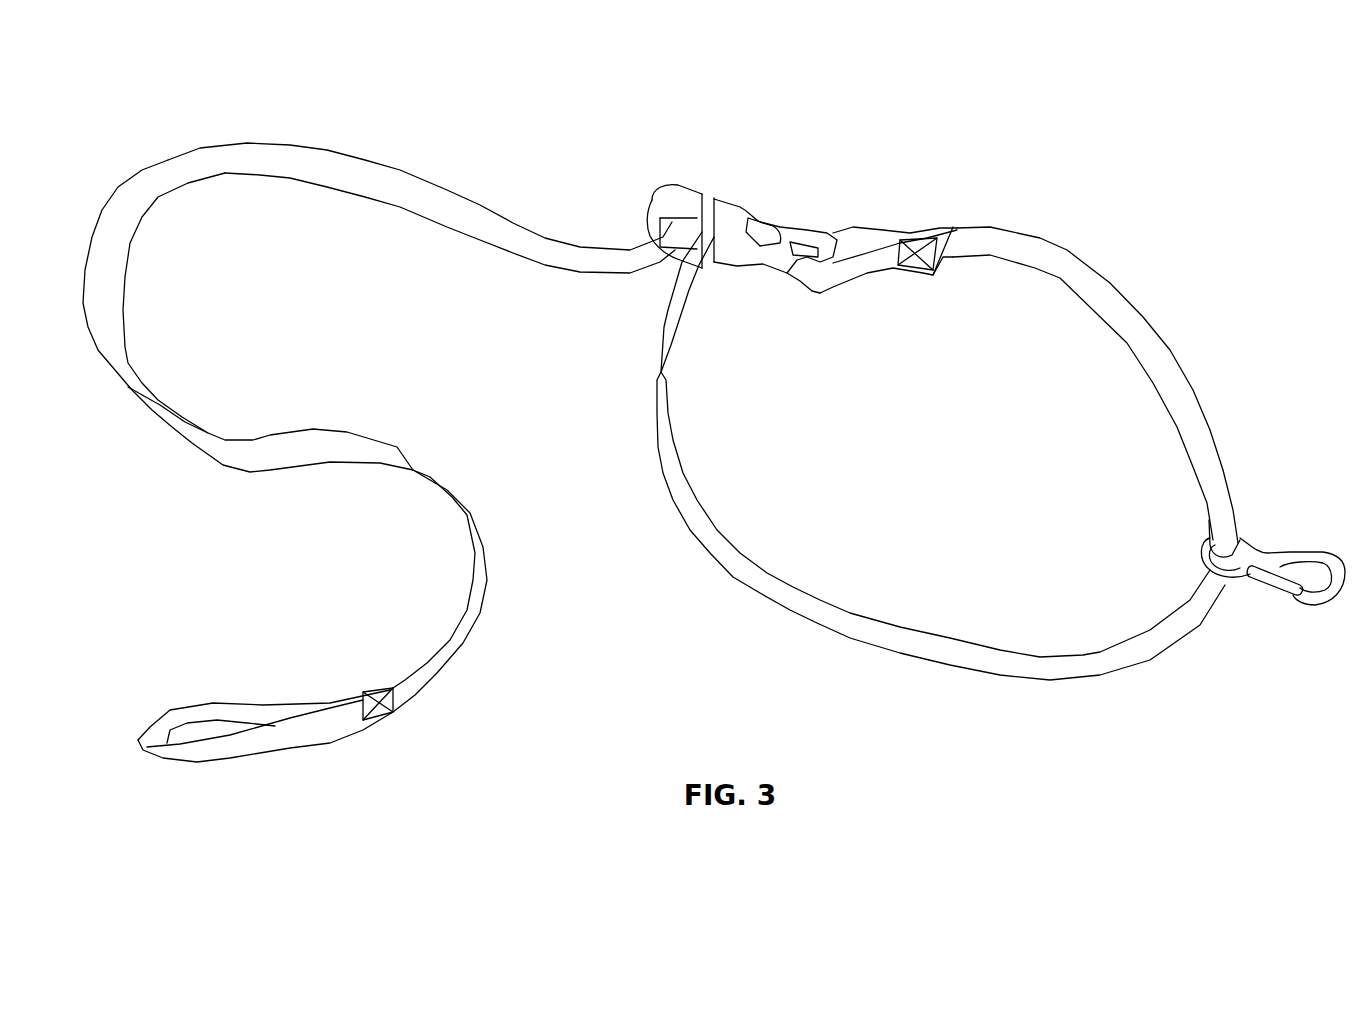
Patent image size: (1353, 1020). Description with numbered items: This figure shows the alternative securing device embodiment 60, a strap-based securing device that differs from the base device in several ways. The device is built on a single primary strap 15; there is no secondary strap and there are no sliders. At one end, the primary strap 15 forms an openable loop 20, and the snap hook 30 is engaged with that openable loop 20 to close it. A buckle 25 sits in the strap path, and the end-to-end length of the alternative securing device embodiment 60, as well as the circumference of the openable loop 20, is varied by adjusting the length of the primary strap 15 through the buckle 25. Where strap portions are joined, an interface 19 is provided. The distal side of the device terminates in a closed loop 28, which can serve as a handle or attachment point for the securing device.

The alternative securing device embodiment 60 is at (830, 110).
The primary strap 15 is at (160, 146).
The interface 19 is at (373, 723).
The openable loop 20 is at (1186, 331).
The buckle 25 is at (742, 200).
The closed loop 28 is at (250, 748).
The snap hook 30 is at (1290, 542).